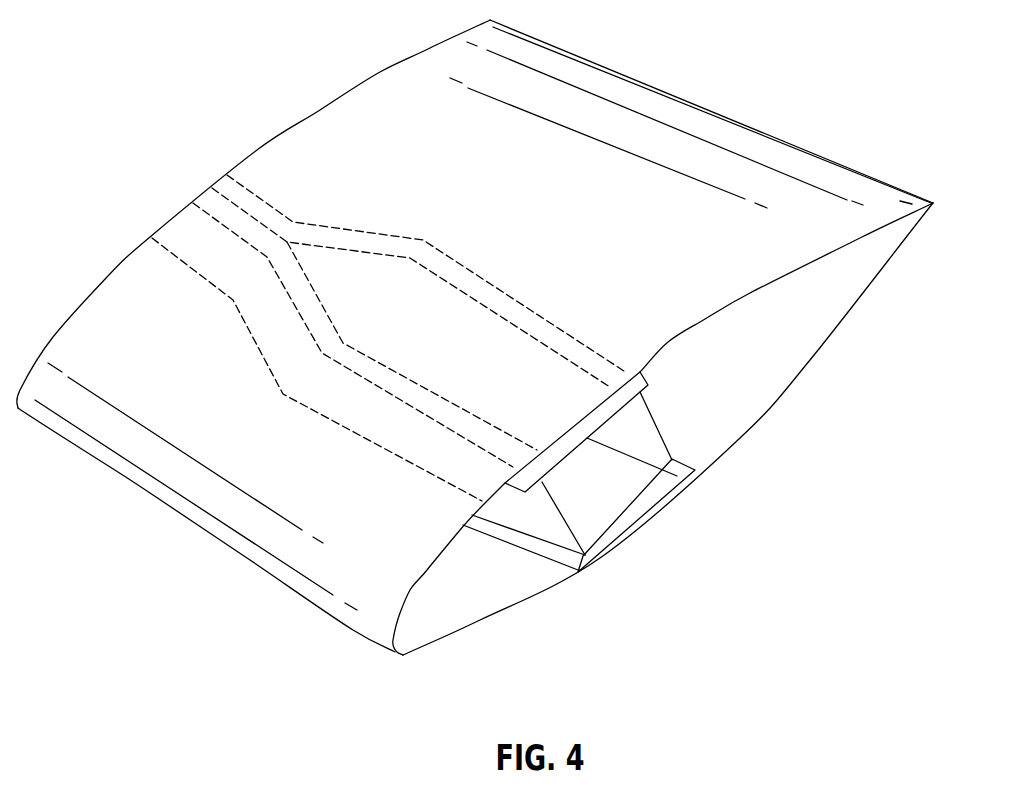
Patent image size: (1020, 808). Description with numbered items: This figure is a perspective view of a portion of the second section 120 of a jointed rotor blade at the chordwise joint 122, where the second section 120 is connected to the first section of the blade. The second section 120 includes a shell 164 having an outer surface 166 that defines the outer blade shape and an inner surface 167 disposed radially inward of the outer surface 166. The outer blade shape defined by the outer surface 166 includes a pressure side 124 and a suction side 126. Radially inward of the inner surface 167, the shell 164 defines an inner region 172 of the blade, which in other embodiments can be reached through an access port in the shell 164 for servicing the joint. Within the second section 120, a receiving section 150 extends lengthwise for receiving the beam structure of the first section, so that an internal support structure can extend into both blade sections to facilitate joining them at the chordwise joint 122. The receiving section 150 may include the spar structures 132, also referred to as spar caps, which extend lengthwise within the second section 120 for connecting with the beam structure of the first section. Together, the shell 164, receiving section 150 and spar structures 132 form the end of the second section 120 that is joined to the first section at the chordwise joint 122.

The second section 120 is at (831, 177).
The chordwise joint 122 is at (406, 670).
The pressure side 124 is at (845, 348).
The suction side 126 is at (420, 90).
The spar structures 132 is at (483, 278).
The receiving section 150 is at (627, 497).
The shell 164 is at (303, 513).
The outer surface 166 is at (124, 304).
The inner surface 167 is at (485, 608).
The inner region 172 is at (700, 386).